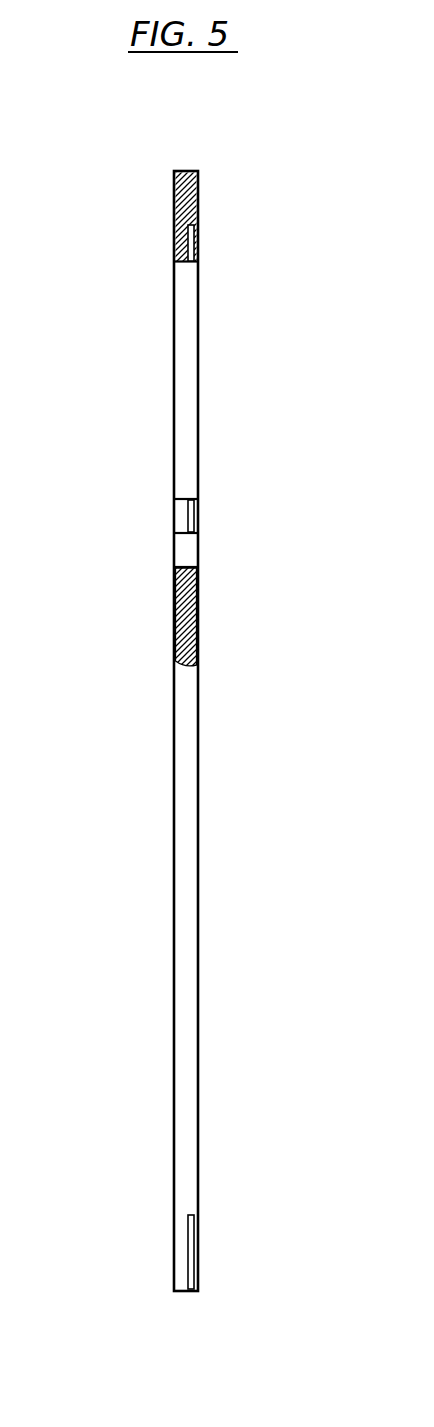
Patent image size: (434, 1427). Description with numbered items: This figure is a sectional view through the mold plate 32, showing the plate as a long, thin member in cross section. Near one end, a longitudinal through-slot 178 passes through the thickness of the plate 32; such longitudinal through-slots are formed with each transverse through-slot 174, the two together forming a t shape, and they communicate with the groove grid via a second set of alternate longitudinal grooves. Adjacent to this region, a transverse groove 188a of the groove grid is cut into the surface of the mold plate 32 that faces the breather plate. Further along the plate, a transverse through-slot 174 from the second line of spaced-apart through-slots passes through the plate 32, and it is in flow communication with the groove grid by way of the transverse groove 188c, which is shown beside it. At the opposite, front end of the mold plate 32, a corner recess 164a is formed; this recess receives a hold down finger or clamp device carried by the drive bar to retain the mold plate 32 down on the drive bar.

The mold plate 32 is at (200, 825).
The longitudinal through-slots 178 is at (176, 262).
The transverse groove 188a is at (192, 245).
The transverse through-slots 174 is at (175, 512).
The transverse groove 188c is at (192, 515).
The corner recess 164a is at (190, 1252).